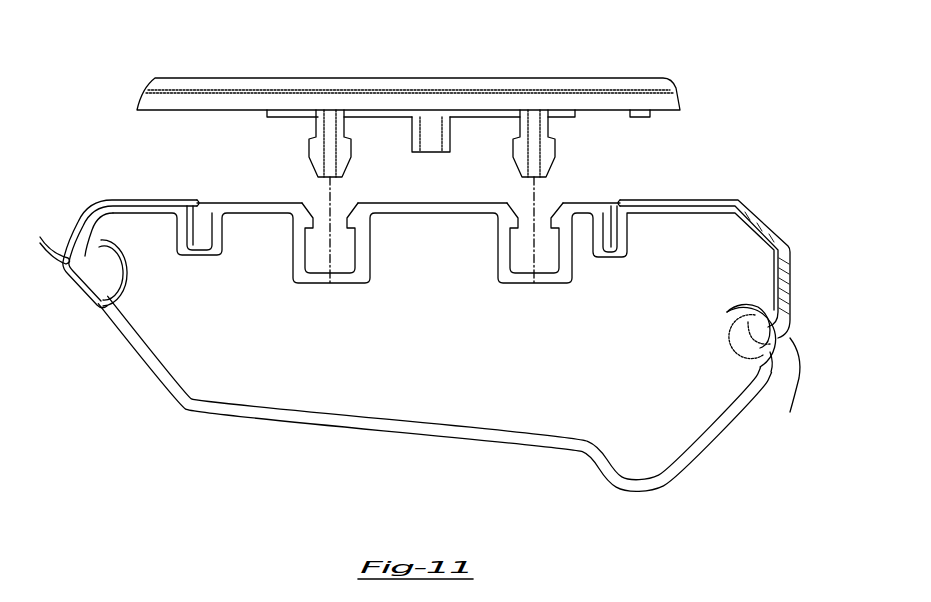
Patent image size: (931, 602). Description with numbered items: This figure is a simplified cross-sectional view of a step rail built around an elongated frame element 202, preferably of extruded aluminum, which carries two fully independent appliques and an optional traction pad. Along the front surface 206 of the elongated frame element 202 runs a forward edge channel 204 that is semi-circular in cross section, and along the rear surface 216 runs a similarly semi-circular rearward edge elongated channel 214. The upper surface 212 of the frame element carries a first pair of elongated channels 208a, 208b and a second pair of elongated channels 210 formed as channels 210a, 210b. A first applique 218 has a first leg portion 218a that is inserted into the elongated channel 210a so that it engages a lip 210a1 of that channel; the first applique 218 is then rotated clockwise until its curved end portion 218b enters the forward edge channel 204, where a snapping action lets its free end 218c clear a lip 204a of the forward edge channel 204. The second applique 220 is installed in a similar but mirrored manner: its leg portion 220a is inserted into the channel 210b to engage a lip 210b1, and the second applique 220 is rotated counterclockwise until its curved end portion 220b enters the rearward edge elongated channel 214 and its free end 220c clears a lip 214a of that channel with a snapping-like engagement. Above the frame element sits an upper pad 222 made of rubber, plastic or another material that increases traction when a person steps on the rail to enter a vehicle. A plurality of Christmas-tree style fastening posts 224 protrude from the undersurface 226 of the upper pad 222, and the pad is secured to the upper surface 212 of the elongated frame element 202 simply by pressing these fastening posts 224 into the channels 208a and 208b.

The elongated frame element 202 is at (428, 392).
The forward edge channel 204 is at (727, 446).
The lip 204a is at (784, 305).
The front surface 206 is at (697, 464).
The elongated channel 208a is at (334, 273).
The elongated channel 208b is at (511, 262).
The frame bracket 210 is at (419, 195).
The elongated channel 210a is at (615, 245).
The lip 210a1 is at (623, 206).
The channel 210b is at (203, 232).
The lip 210b1 is at (185, 200).
The upper surface 212 is at (447, 192).
The rearward edge elongated channel 214 is at (125, 296).
The lip 214a is at (46, 240).
The rear surface 216 is at (140, 365).
The first applique 218 is at (691, 301).
The first leg portion 218a is at (590, 200).
The curved end portion 218b is at (791, 412).
The free end 218c is at (738, 320).
The second applique 220 is at (155, 244).
The leg portion 220a is at (228, 200).
The curved end portion 220b is at (84, 300).
The free end 220c is at (88, 244).
The upper pad 222 is at (503, 72).
The fastening posts 224 is at (336, 126).
The undersurface 226 is at (634, 116).